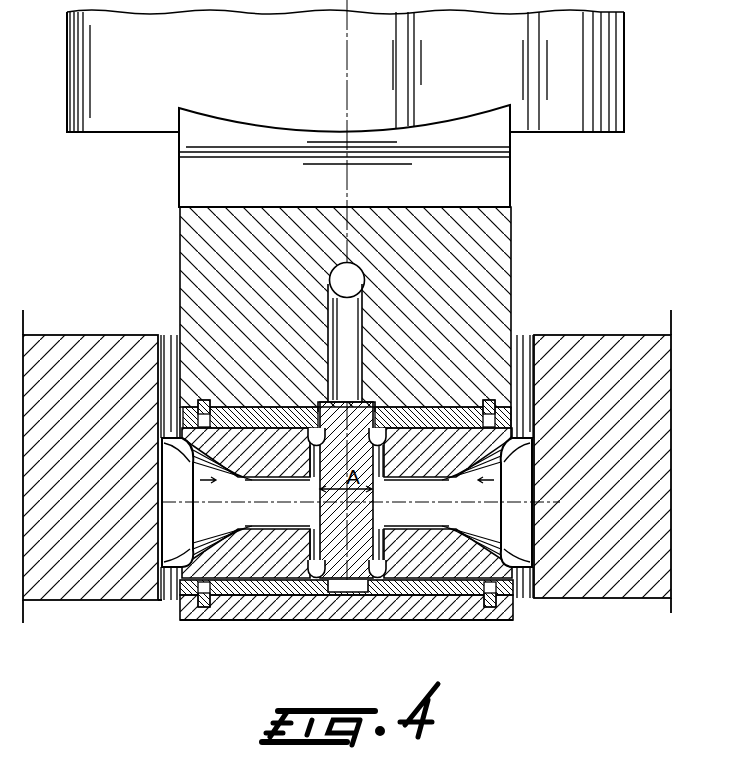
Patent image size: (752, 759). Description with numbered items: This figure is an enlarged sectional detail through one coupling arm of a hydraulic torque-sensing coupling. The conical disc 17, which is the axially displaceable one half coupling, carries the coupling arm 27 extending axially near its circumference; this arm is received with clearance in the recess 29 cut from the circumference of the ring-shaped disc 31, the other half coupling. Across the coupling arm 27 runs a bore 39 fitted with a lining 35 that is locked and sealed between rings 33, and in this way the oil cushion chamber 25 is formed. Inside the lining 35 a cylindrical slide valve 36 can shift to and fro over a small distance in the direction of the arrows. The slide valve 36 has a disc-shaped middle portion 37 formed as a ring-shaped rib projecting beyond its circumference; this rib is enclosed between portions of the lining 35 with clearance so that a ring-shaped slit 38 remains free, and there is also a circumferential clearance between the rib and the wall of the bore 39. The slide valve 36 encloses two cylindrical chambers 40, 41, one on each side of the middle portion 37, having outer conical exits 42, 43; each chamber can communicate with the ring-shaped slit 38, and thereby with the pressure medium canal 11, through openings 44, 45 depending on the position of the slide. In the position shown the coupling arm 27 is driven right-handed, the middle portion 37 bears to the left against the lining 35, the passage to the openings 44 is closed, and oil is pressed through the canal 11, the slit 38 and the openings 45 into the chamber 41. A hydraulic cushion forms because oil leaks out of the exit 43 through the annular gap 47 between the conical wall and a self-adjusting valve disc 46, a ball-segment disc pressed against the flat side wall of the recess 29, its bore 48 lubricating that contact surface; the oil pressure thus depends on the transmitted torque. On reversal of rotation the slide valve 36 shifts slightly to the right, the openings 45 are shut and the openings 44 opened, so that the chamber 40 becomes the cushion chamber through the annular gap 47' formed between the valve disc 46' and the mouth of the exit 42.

The canal 11 is at (358, 270).
The conical disc 17 is at (503, 166).
The oil cushion chamber 25 is at (162, 443).
The coupling arm 27 is at (486, 272).
The recess 29 is at (170, 350).
The disc 31 is at (78, 353).
The rings 33 is at (205, 610).
The lining 35 is at (396, 600).
The slide valve 36 is at (419, 592).
The disc-shaped middle portion 37 is at (380, 600).
The ring-shaped slit 38 is at (389, 405).
The bore 39 is at (438, 619).
The cylindrical chamber 40 is at (281, 528).
The cylindrical chamber 41 is at (436, 548).
The conical exit 42 is at (218, 548).
The conical exit 43 is at (513, 567).
The openings 44 is at (315, 522).
The openings 45 is at (380, 480).
The valve disc 46 is at (560, 593).
The valve disc 46' is at (146, 604).
The annular gap 47 is at (519, 477).
The annular gap 47' is at (192, 604).
The bore 48 is at (521, 503).